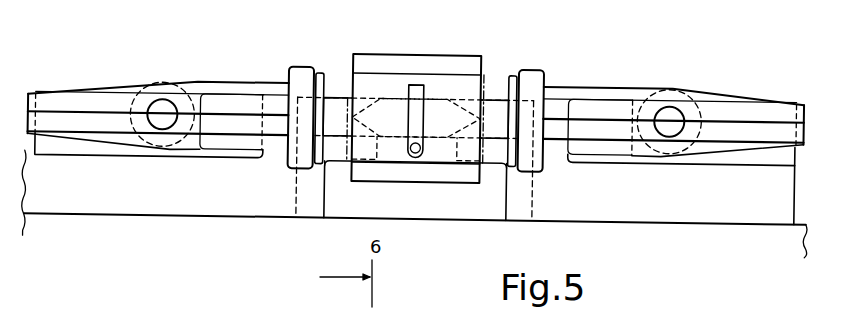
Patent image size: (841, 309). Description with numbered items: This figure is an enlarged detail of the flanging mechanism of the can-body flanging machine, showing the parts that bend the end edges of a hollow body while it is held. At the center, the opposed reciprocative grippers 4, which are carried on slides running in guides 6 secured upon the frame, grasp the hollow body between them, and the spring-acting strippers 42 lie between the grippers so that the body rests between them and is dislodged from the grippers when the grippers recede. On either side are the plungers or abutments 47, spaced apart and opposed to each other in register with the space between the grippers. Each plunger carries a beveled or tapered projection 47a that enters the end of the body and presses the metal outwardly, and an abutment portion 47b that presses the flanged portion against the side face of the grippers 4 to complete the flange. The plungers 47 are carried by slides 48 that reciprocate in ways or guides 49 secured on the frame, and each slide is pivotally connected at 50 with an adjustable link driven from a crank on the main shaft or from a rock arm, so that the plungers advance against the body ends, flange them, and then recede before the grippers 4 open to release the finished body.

The reciprocative grippers 4 is at (448, 63).
The guides 6 is at (335, 108).
The spring-acting strippers 42 is at (410, 90).
The plungers or abutments 47 is at (300, 73).
The projections 47a is at (319, 74).
The abutment portions 47b is at (325, 166).
The slides 48 is at (252, 70).
The ways or guides 49 is at (85, 156).
The pivotal connection 50 is at (162, 112).